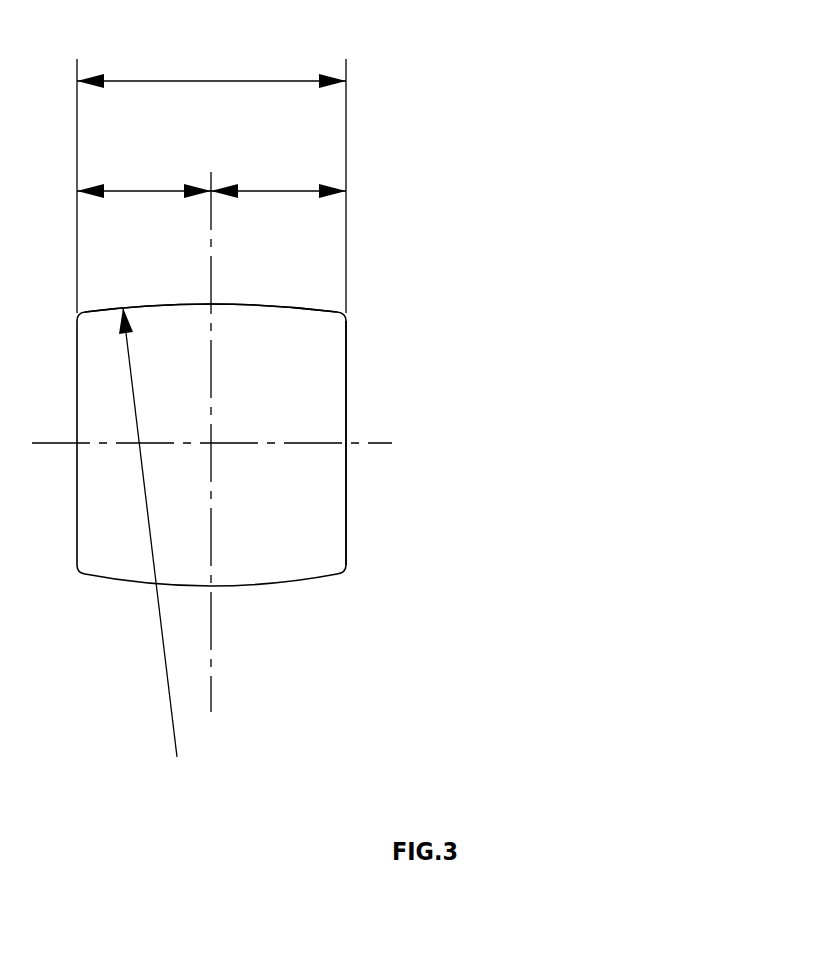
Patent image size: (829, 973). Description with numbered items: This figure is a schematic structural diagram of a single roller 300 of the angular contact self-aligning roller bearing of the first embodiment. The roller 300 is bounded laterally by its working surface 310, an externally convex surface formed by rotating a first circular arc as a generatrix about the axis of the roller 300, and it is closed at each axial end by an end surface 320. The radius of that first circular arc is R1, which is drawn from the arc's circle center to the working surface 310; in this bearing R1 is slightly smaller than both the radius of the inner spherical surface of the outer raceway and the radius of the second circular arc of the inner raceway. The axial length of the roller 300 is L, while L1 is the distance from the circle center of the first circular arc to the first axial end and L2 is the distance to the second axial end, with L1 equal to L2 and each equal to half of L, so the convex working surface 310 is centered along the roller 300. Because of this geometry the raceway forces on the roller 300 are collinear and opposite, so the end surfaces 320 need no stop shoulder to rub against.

The roller 300 is at (193, 503).
The working surface of roller 310 is at (298, 305).
The end surface of roller 320 is at (347, 412).
The axial length of roller L is at (211, 156).
The distance between circle center of first circular arc and axial first end of roll L1 is at (144, 155).
The distance between circle center of first circular arc and axial second end of rol L2 is at (278, 155).
The radius of first circular arc R1 is at (135, 552).